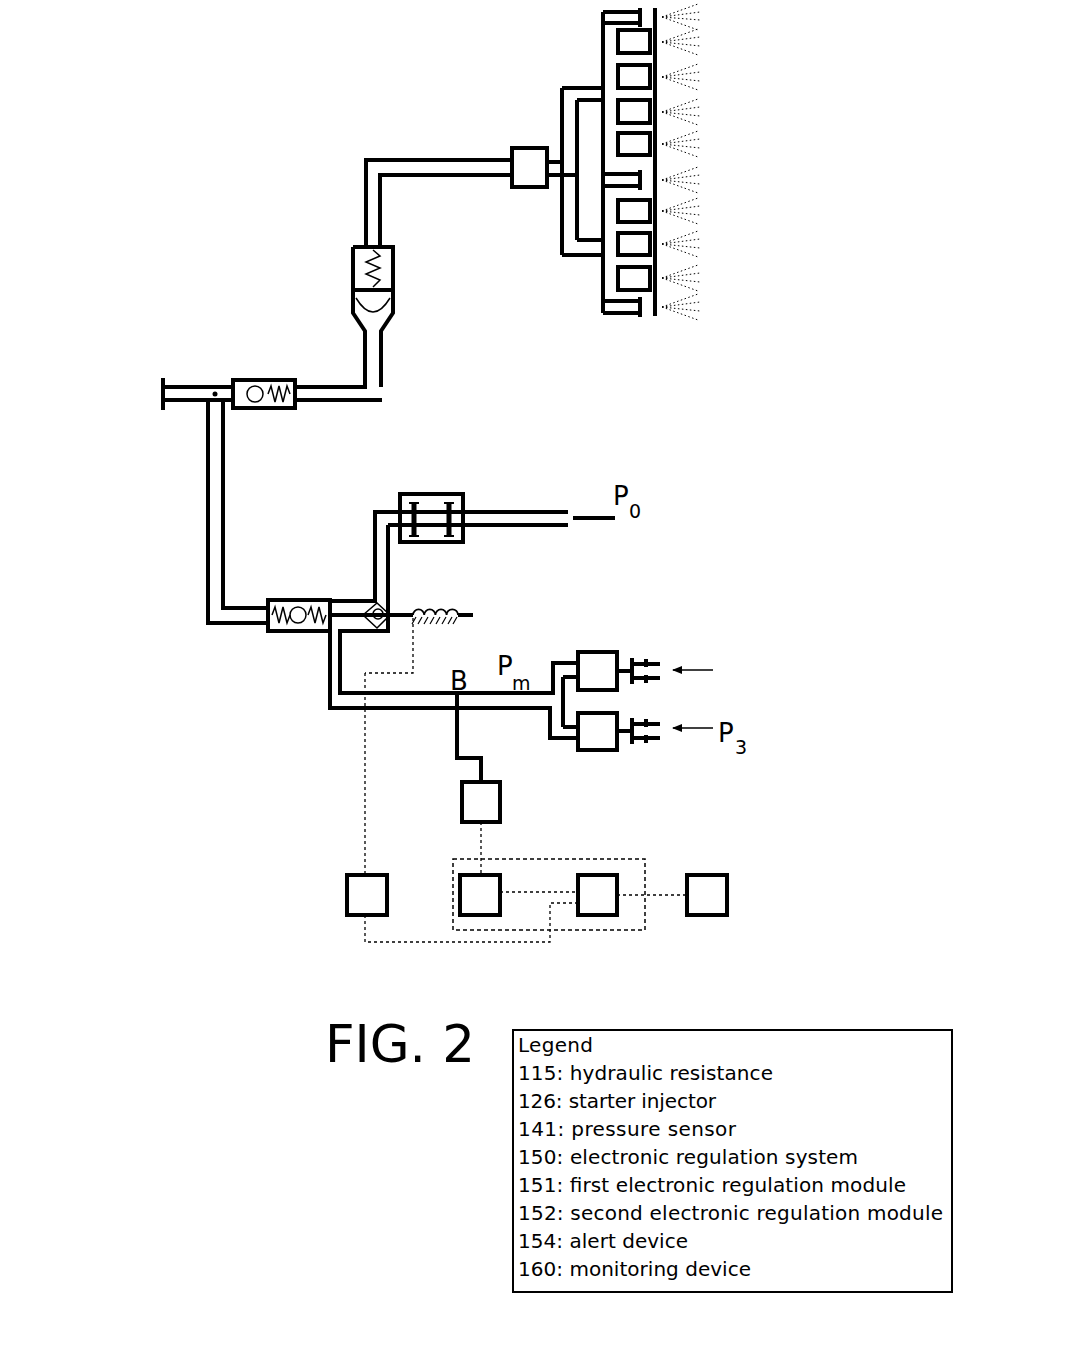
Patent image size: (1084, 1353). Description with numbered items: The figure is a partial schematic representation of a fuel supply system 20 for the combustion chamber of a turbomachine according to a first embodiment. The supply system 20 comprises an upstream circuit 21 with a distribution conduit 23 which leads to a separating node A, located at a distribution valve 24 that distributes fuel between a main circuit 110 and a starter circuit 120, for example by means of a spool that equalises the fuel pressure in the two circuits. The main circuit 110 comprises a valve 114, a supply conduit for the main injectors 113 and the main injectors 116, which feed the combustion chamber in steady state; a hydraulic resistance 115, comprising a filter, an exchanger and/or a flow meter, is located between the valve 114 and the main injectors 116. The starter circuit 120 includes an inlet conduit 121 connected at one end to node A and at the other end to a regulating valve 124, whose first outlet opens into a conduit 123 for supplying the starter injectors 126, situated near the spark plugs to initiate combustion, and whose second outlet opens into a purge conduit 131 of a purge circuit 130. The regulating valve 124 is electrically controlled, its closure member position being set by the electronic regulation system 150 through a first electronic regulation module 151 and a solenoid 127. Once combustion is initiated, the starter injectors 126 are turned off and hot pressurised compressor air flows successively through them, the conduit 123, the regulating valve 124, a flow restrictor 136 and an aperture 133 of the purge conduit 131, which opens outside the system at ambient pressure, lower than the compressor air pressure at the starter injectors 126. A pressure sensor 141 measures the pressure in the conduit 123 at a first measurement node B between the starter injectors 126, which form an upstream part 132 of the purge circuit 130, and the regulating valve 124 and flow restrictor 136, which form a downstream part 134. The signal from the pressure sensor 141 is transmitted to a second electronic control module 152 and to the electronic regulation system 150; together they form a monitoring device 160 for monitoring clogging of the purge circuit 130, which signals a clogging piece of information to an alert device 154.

The fuel supply system 20 is at (165, 107).
The upstream circuit 21 is at (180, 423).
The distribution conduit 23 is at (178, 385).
The distribution valve 24 is at (268, 380).
The main circuit 110 is at (370, 151).
The supply conduit for the main injectors 113 is at (456, 160).
The valve 114 is at (351, 262).
The hydraulic resistance 115 is at (529, 148).
The main injectors 116 is at (722, 51).
The starter circuit 120 is at (183, 589).
The inlet conduit 121 is at (208, 630).
The conduit for supplying the starter injectors 123 is at (510, 700).
The regulating valve 124 is at (282, 635).
The starter injectors 126 is at (627, 650).
The solenoid 127 is at (457, 599).
The purge circuit 130 is at (519, 486).
The purge conduit 131 is at (533, 527).
The upstream part 132 is at (671, 640).
The aperture 133 is at (562, 508).
The downstream part 134 is at (477, 482).
The flow restrictor 136 is at (463, 498).
The pressure sensor 141 is at (470, 800).
The electronic regulation system 150 is at (593, 887).
The first electronic regulation module 151 is at (355, 890).
The second electronic control module 152 is at (470, 895).
The alert device 154 is at (707, 903).
The monitoring device 160 is at (597, 859).